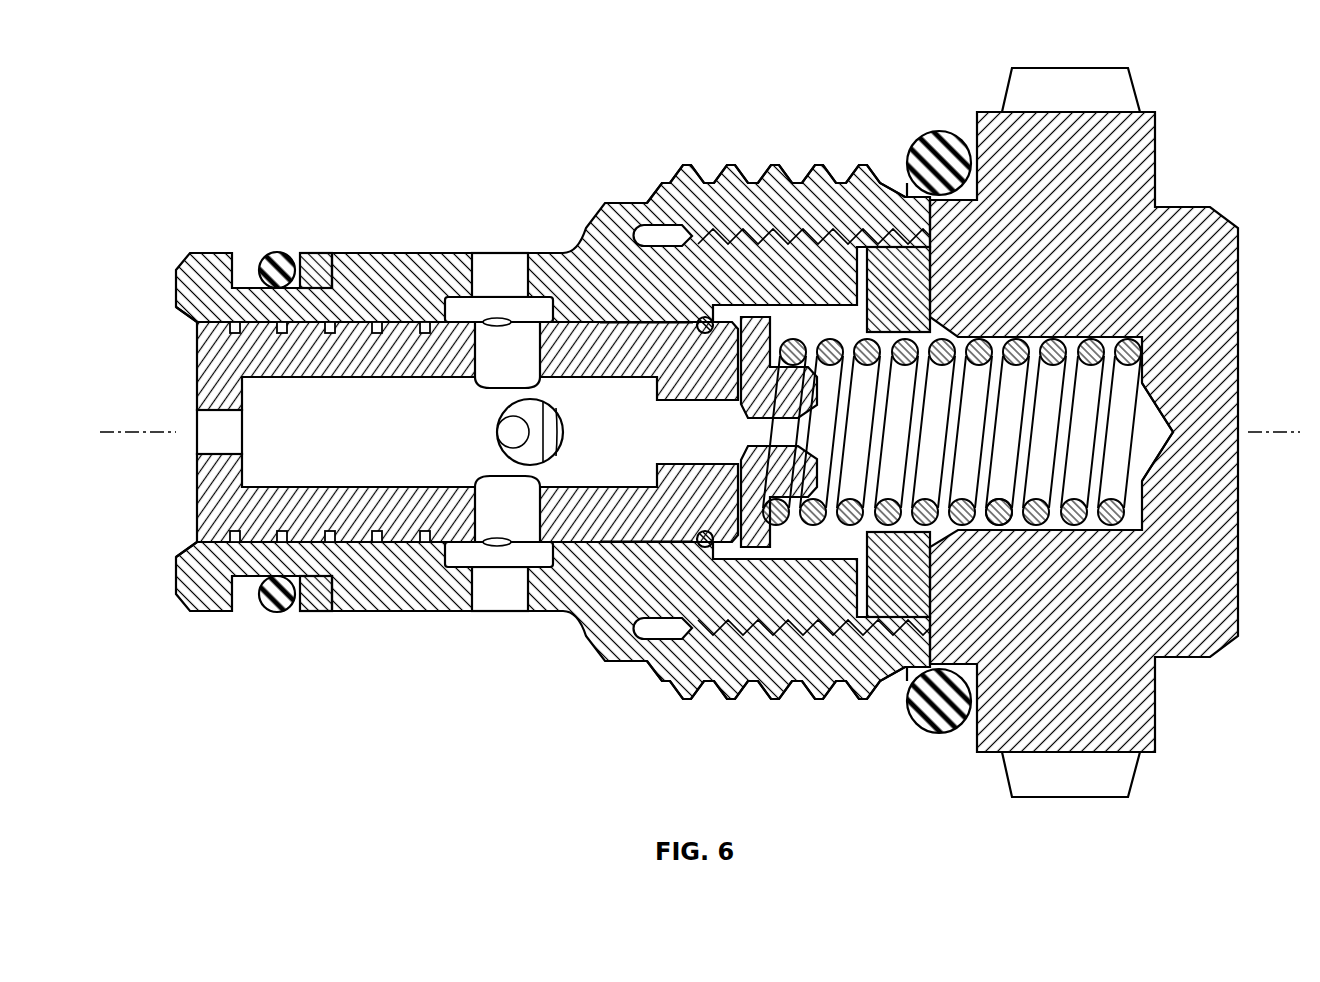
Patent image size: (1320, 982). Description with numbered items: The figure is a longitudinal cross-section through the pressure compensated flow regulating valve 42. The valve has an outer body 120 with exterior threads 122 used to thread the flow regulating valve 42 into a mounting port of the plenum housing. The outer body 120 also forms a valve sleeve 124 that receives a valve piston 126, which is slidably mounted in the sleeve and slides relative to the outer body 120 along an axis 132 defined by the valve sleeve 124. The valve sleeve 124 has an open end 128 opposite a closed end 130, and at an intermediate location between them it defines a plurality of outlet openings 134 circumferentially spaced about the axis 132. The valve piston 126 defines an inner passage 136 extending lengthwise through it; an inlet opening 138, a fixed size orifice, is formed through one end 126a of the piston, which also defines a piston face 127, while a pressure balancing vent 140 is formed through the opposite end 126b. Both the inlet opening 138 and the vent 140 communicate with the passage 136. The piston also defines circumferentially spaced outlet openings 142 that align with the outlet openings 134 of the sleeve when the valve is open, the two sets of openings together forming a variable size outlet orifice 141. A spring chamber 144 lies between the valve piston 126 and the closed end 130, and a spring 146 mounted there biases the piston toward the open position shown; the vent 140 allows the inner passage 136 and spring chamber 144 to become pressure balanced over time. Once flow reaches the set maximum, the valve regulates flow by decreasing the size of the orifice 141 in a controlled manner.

The flow regulating valve 42 is at (227, 146).
The outer body 120 is at (1125, 401).
The exterior threads 122 is at (729, 165).
The valve sleeve 124 is at (352, 256).
The valve piston 126 is at (455, 477).
The end of valve piston 126a is at (411, 363).
The opposite end of valve piston 126b is at (779, 551).
The piston face 127 is at (197, 484).
The open end 128 is at (190, 316).
The closed end 130 is at (1162, 410).
The axis 132 is at (105, 433).
The outlet openings of valve sleeve 134 is at (520, 252).
The inner passage 136 is at (363, 374).
The inlet opening 138 is at (197, 427).
The pressure balancing vent 140 is at (773, 448).
The variable size outlet orifice 141 is at (492, 253).
The outlet openings of valve piston 142 is at (482, 352).
The spring chamber 144 is at (1093, 515).
The spring 146 is at (998, 512).